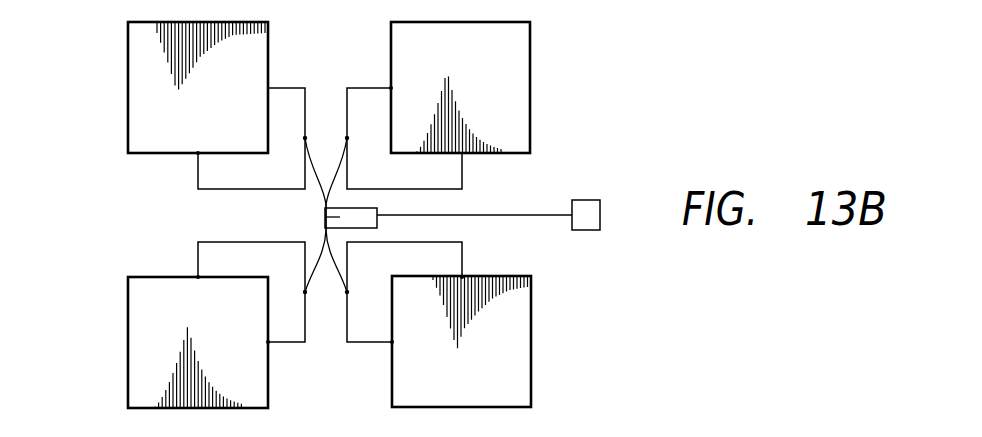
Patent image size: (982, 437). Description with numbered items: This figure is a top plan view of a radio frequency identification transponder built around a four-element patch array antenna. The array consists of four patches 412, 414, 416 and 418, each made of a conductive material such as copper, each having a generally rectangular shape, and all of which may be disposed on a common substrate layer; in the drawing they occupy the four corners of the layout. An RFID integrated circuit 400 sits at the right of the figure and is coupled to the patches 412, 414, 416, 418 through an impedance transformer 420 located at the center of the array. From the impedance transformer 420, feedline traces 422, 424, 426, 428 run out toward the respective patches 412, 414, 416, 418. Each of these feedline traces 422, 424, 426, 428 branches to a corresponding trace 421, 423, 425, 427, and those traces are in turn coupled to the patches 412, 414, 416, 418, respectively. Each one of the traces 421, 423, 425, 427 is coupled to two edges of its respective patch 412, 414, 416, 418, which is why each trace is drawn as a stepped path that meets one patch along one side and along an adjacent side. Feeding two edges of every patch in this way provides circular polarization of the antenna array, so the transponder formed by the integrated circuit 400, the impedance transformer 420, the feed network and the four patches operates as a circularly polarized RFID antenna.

The RFID integrated circuit 400 is at (600, 213).
The patch 412 is at (512, 52).
The patch 414 is at (137, 50).
The patch 416 is at (520, 328).
The patch 418 is at (140, 325).
The impedance transformer 420 is at (367, 223).
The trace 421 is at (347, 102).
The feedline trace 422 is at (372, 147).
The trace 423 is at (305, 108).
The feedline trace 424 is at (318, 180).
The trace 425 is at (370, 342).
The feedline trace 426 is at (332, 278).
The trace 427 is at (305, 318).
The feedline trace 428 is at (322, 268).